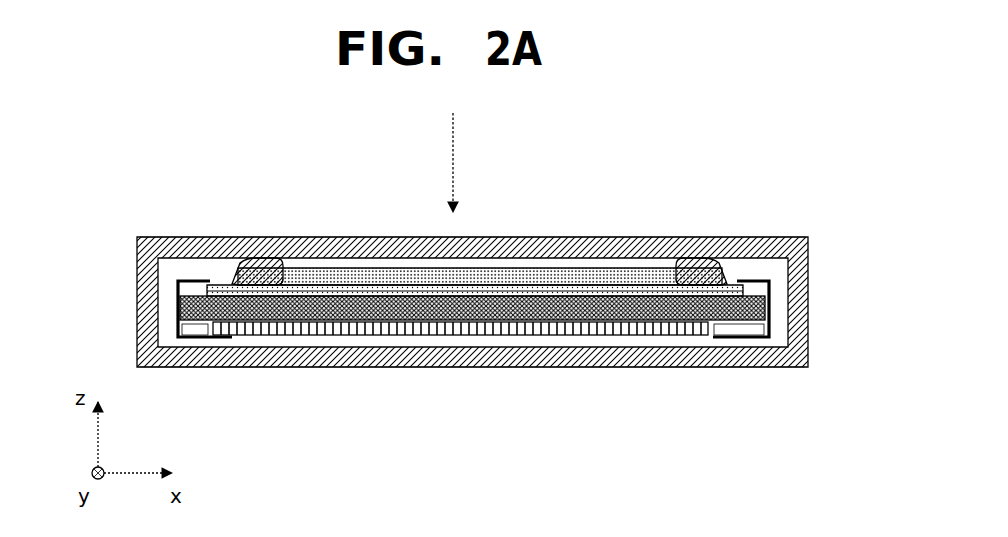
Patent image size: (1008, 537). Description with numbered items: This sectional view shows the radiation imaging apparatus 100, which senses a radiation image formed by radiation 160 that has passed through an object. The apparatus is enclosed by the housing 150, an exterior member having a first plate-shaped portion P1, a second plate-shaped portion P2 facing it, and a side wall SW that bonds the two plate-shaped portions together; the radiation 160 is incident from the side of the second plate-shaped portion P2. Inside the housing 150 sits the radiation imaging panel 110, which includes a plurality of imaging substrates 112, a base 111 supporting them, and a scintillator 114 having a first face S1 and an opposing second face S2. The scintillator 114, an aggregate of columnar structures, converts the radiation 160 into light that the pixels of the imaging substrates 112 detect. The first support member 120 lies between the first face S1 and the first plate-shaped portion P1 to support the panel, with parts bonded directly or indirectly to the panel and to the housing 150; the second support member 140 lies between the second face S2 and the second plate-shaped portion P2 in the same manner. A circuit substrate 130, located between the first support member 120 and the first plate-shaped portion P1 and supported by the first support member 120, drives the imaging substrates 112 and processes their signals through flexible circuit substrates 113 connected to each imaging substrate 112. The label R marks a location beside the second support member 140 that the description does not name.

The radiation imaging apparatus 100 is at (425, 310).
The radiation imaging panel 110 is at (472, 218).
The base 111 is at (602, 298).
The imaging substrate 112 is at (625, 288).
The scintillator 114 is at (655, 281).
The flexible circuit substrate 113 is at (176, 323).
The first support member 120 is at (431, 312).
The circuit substrate 130 is at (498, 336).
The second support member 140 is at (258, 262).
The housing 150 is at (533, 268).
The radiation 160 is at (455, 145).
The side wall SW is at (147, 285).
The first plate-shaped portion P1 is at (228, 350).
The second plate-shaped portion P2 is at (366, 246).
The first face S1 is at (413, 292).
The second face S2 is at (462, 262).
The rounded corner R is at (297, 258).